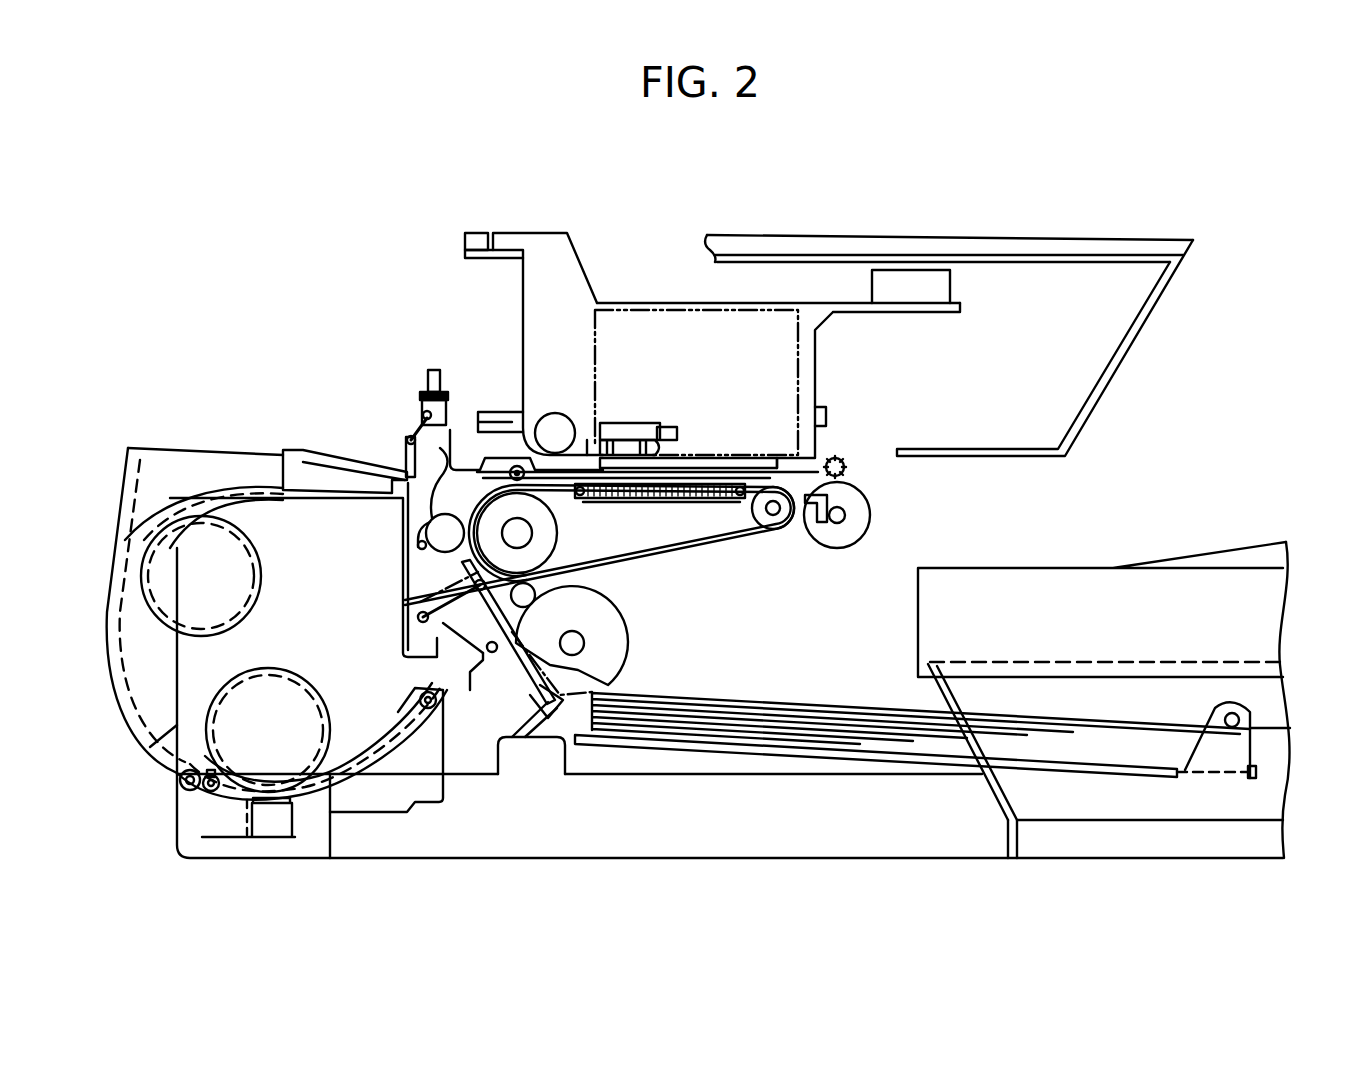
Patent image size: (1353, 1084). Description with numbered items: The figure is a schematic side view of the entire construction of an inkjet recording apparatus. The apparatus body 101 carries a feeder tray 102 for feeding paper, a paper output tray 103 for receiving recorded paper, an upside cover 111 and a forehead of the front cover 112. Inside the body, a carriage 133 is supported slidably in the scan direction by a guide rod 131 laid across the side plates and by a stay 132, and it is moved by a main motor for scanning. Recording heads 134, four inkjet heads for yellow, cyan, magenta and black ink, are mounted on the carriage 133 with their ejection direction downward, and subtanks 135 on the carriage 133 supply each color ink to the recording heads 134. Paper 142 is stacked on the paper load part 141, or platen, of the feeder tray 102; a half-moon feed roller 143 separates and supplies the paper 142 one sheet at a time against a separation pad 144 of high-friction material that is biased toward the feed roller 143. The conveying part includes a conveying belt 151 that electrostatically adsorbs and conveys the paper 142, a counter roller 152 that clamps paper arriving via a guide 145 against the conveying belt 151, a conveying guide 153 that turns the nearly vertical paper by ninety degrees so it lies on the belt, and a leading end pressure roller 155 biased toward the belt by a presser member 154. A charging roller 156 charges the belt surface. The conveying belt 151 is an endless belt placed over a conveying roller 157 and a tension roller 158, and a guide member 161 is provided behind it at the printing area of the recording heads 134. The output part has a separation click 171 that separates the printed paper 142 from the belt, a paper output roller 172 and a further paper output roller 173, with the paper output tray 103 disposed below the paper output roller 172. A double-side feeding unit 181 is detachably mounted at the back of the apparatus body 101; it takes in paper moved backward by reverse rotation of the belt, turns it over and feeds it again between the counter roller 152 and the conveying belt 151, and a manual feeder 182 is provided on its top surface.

The apparatus body 101 is at (943, 193).
The feeder tray 102 is at (1103, 842).
The paper output tray 103 is at (1190, 553).
The upside cover 111 is at (1020, 240).
The forehead of the front cover 112 is at (1125, 355).
The guide rod 131 is at (557, 420).
The stay 132 is at (477, 237).
The carriage 133 is at (575, 268).
The recording heads 134 is at (718, 463).
The subtanks 135 is at (757, 322).
The paper load part 141 is at (676, 748).
The paper 142 is at (768, 737).
The feed roller 143 is at (622, 648).
The separation pad 144 is at (528, 740).
The guide 145 is at (482, 657).
The conveying belt 151 is at (688, 552).
The counter roller 152 is at (425, 533).
The conveying guide 153 is at (445, 495).
The presser member 154 is at (443, 448).
The leading end pressure roller 155 is at (516, 466).
The charging roller 156 is at (532, 596).
The conveying roller 157 is at (557, 534).
The tension roller 158 is at (775, 520).
The guide member 161 is at (645, 500).
The separation click 171 is at (820, 527).
The paper output roller 172 is at (868, 511).
The paper output roller 173 is at (845, 467).
The double-side feeding unit 181 is at (140, 470).
The manual feeder 182 is at (283, 442).